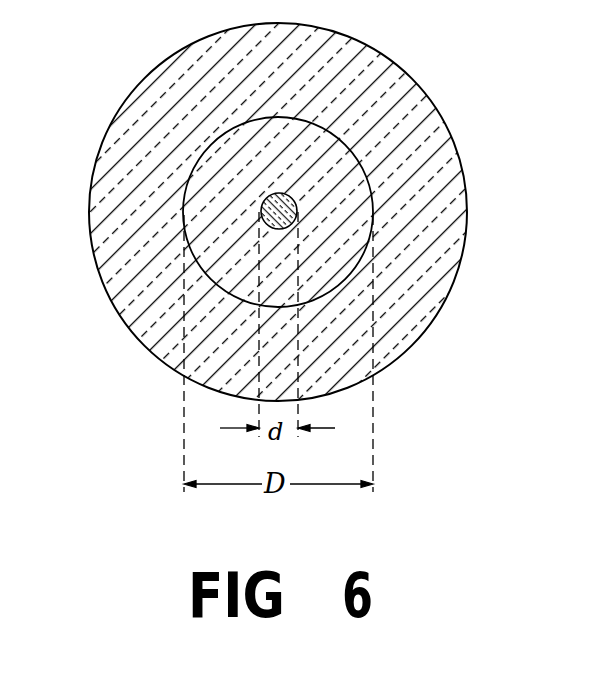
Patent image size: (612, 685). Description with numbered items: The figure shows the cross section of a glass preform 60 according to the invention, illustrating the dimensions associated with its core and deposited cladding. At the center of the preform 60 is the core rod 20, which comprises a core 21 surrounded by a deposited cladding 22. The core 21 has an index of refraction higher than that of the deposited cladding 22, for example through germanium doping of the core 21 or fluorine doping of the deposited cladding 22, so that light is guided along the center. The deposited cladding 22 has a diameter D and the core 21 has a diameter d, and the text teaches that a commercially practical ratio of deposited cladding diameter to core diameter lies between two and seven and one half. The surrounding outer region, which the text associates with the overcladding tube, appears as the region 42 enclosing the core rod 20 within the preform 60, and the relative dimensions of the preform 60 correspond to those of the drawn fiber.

The preform 60 is at (170, 42).
The core rod 20 is at (313, 117).
The core 21 is at (290, 194).
The deposited cladding 22 is at (352, 258).
The outer glass sleeve 42 is at (420, 250).